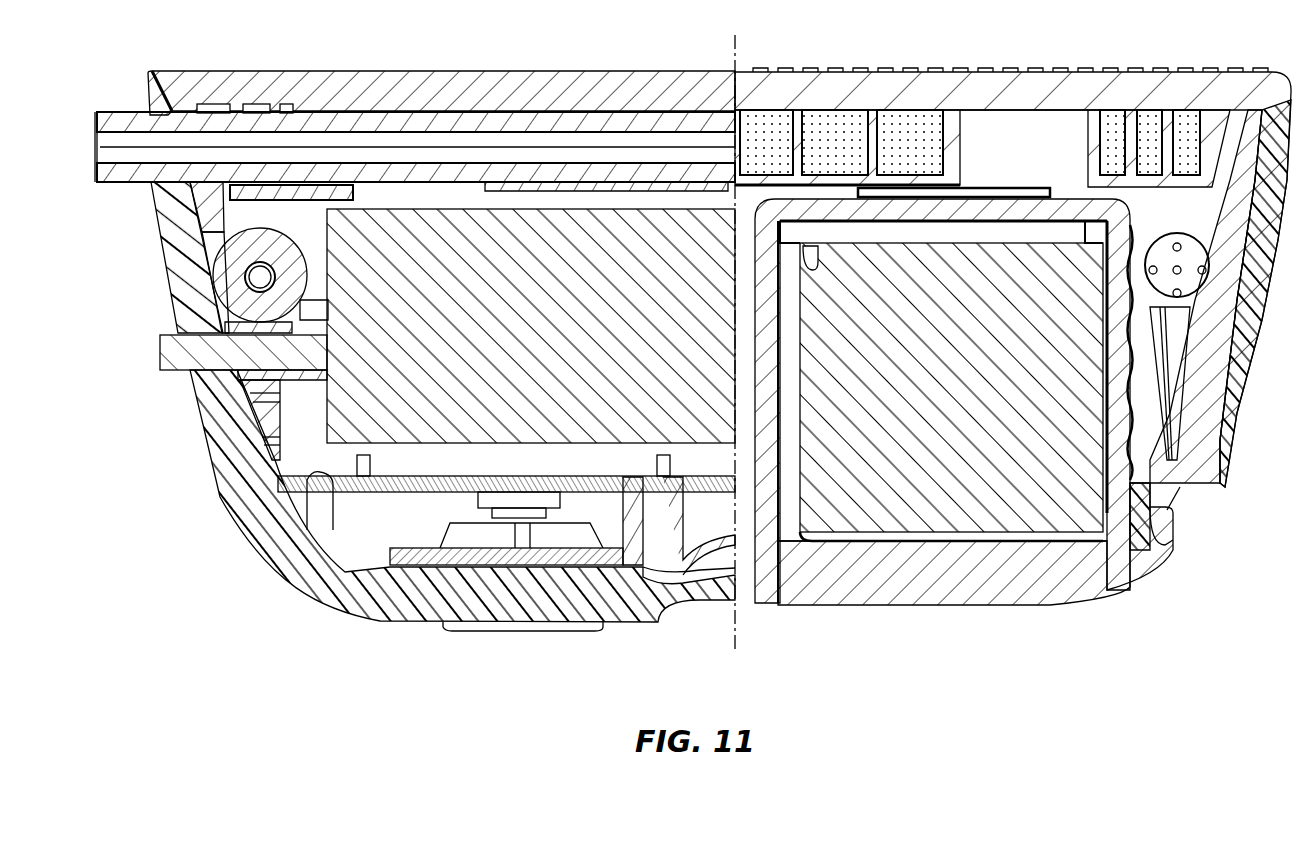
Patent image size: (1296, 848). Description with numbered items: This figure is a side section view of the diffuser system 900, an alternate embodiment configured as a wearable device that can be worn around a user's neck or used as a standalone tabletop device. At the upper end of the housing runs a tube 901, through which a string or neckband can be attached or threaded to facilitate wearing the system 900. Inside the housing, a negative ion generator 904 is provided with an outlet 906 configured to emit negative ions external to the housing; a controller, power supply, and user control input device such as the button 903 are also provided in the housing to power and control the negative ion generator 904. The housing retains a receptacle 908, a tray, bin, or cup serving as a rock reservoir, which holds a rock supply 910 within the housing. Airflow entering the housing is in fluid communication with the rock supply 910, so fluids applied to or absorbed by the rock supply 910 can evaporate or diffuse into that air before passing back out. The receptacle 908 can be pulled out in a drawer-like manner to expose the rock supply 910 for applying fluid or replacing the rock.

The diffuser system 900 is at (1180, 612).
The tube 901 is at (116, 111).
The button 903 is at (510, 630).
The negative ion generator 904 is at (561, 340).
The outlet 906 is at (160, 340).
The receptacle 908 is at (1045, 607).
The rock supply 910 is at (970, 400).